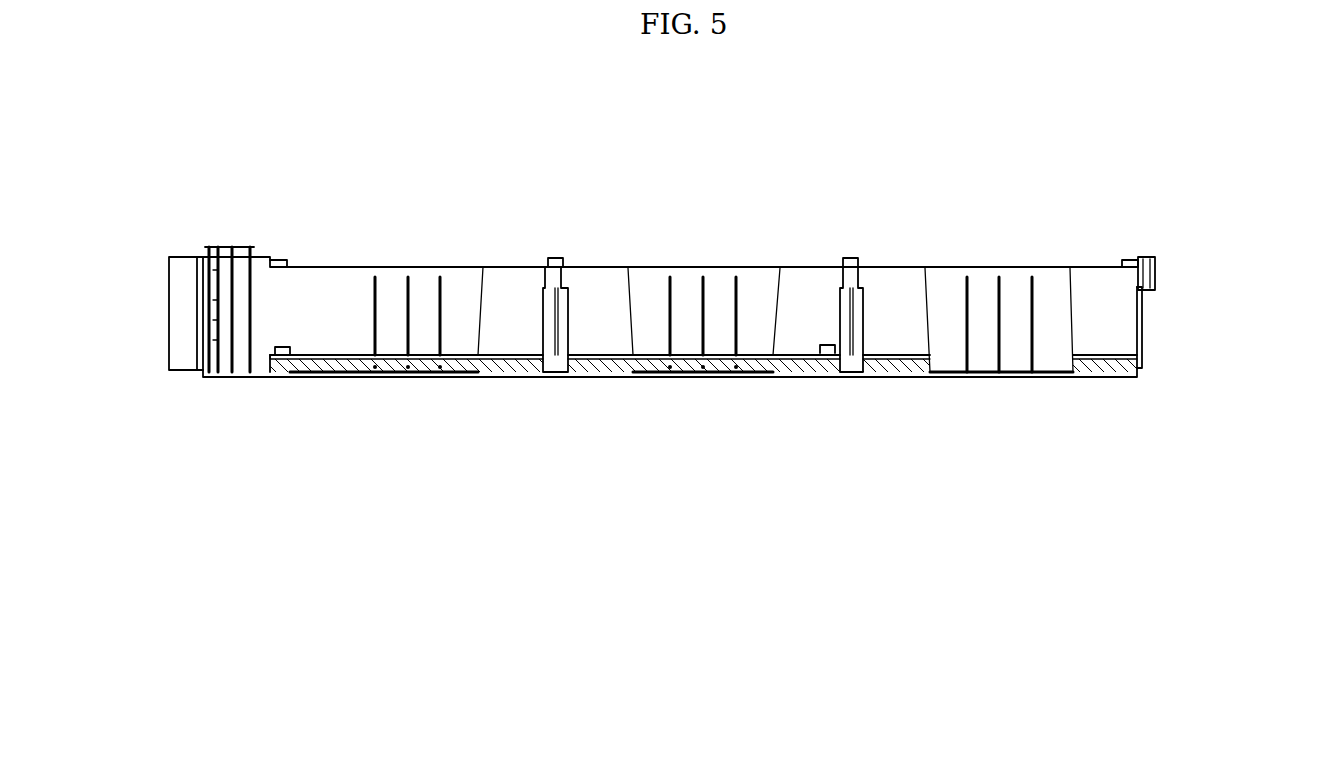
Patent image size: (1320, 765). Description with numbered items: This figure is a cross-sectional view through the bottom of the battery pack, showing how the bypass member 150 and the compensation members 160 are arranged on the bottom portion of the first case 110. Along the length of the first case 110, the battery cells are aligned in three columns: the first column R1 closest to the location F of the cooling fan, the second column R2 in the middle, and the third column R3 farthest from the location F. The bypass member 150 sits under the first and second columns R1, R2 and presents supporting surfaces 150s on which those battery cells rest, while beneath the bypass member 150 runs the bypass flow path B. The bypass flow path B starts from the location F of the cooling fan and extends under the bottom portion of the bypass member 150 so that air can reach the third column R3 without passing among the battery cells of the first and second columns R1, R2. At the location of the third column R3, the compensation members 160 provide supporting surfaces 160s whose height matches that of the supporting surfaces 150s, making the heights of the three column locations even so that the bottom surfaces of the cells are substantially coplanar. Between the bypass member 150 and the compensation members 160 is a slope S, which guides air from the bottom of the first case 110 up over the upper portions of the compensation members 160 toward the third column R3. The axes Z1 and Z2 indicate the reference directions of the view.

The first case 110 is at (1160, 320).
The bypass member 150 is at (512, 365).
The supporting surfaces 150s is at (317, 357).
The compensation members 160 is at (1095, 366).
The supporting surfaces 160s is at (1103, 355).
The location of the cooling fan F is at (170, 372).
The slope S is at (853, 362).
The first column R1 is at (405, 236).
The second column R2 is at (702, 236).
The third column R3 is at (997, 236).
The bypass flow path B is at (287, 483).
The Z1 direction Z1 is at (1000, 613).
The Z2 direction Z2 is at (1000, 613).